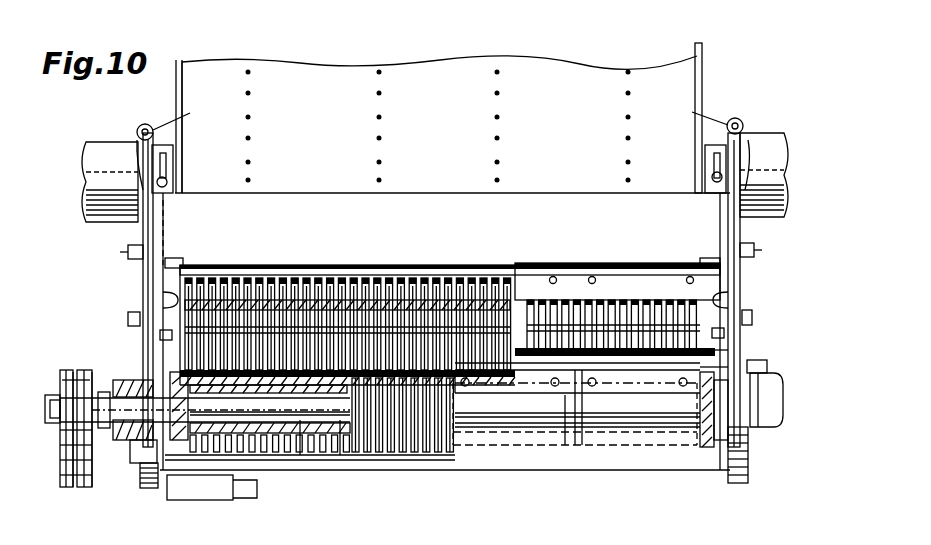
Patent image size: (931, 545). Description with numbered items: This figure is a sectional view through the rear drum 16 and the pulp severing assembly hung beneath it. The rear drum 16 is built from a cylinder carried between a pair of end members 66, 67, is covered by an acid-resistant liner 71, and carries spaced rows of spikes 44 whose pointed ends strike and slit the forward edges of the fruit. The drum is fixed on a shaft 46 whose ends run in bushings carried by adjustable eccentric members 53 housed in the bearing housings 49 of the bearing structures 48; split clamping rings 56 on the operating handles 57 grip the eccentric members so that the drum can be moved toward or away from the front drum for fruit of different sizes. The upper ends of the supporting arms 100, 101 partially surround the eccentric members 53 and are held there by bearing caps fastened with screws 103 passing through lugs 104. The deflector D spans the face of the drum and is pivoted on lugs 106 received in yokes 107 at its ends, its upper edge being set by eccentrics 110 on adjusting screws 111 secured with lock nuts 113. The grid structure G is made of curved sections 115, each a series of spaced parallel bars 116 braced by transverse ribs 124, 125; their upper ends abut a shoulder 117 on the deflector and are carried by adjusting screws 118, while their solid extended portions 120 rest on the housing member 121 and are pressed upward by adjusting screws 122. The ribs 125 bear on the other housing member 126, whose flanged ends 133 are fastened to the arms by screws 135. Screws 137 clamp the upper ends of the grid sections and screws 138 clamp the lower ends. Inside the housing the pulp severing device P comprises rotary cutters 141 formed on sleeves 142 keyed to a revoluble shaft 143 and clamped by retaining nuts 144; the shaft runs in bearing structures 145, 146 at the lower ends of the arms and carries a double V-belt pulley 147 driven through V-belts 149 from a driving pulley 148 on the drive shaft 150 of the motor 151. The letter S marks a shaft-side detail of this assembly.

The rear drum 16 is at (419, 76).
The spikes 44 is at (250, 95).
The liner 71 is at (520, 146).
The deflector D is at (411, 231).
The end member 66 is at (178, 98).
The end member 67 is at (700, 80).
The screws 103 is at (440, 117).
The lugs 104 is at (731, 119).
The eccentric members 53 is at (140, 152).
The split clamping rings 56 is at (173, 150).
The shaft 46 is at (167, 165).
The operating handles 57 is at (168, 183).
The bearing structures 48 is at (82, 175).
The bearing housings 49 is at (98, 171).
The supporting arm 100 is at (150, 210).
The supporting arm 101 is at (733, 203).
The eccentrics 110 is at (168, 262).
The adjusting screws 111 is at (127, 258).
The lock nuts 113 is at (140, 266).
The lugs 106 is at (165, 300).
The yokes 107 is at (160, 318).
The screws 137 is at (162, 336).
The grid structure G is at (180, 357).
The shaft S is at (708, 342).
The bearing structure 145 is at (112, 380).
The double V-belt pulley 147 is at (62, 380).
The driving pulley 148 is at (64, 472).
The V-belts 149 is at (72, 488).
The drive shaft 150 is at (110, 442).
The motor 151 is at (152, 490).
The retaining nuts 144 is at (182, 442).
The rotary cutters 141 is at (226, 454).
The housing member 126 is at (268, 470).
The sleeves 142 is at (300, 422).
The revoluble shaft 143 is at (340, 430).
The pulp severing device P is at (386, 455).
The reenforcing ribs 125 is at (205, 409).
The curved sections 115 is at (257, 276).
The bars 116 is at (284, 278).
The reenforcing ribs 124 is at (312, 330).
The shoulder 117 is at (524, 280).
The adjusting screws 118 is at (596, 278).
The adjusting screws 122 is at (548, 388).
The extended portions 120 is at (574, 388).
The housing member 121 is at (628, 458).
The screws 135 is at (716, 432).
The bearing structure 146 is at (773, 430).
The flanged ends 133 is at (770, 392).
The screws 138 is at (768, 366).